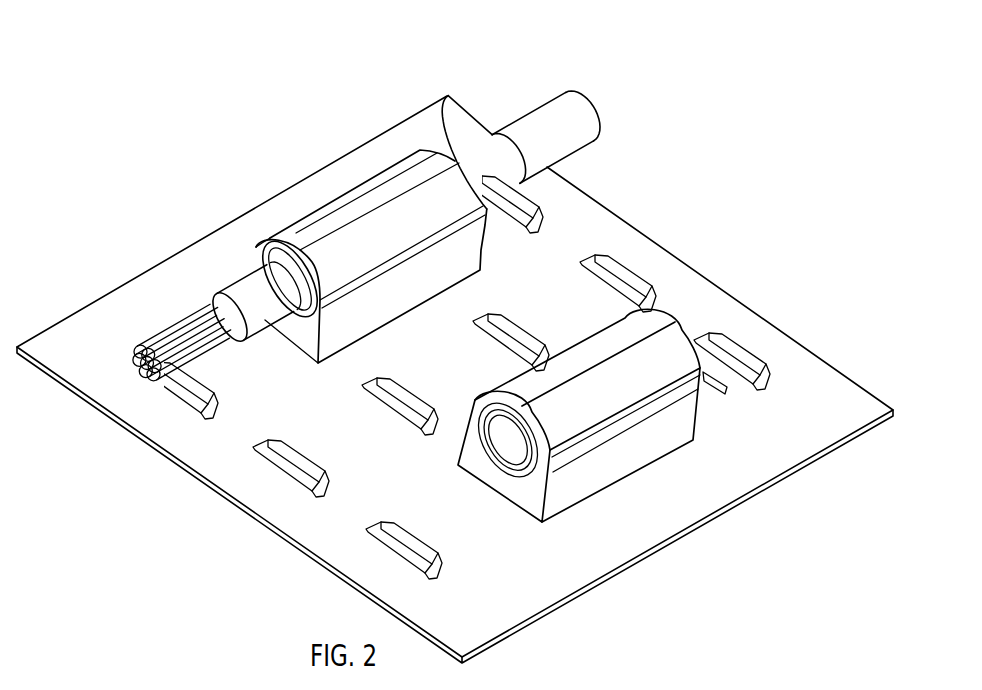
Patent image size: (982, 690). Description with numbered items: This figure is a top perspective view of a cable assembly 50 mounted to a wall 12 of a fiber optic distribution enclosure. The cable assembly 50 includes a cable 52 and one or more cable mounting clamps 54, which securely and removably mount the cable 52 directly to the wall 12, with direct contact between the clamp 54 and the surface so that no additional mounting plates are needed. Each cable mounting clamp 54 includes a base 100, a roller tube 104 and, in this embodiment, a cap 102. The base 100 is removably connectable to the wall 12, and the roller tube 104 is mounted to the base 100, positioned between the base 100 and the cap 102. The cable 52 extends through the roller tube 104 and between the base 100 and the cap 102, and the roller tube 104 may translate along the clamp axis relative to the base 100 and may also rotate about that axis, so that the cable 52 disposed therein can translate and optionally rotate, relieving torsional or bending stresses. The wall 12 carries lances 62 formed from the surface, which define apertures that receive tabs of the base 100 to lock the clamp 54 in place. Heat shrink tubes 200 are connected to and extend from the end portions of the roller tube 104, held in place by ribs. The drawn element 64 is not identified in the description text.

The wall 12 is at (820, 398).
The cable assembly 50 is at (366, 214).
The cable 52 is at (526, 96).
The cable mounting clamp 54 is at (316, 200).
The lance 62 is at (456, 374).
The clip tab 64 is at (596, 289).
The base 100 is at (482, 358).
The cap 102 is at (413, 217).
The roller tube 104 is at (508, 462).
The heat shrink tube 200 is at (473, 150).